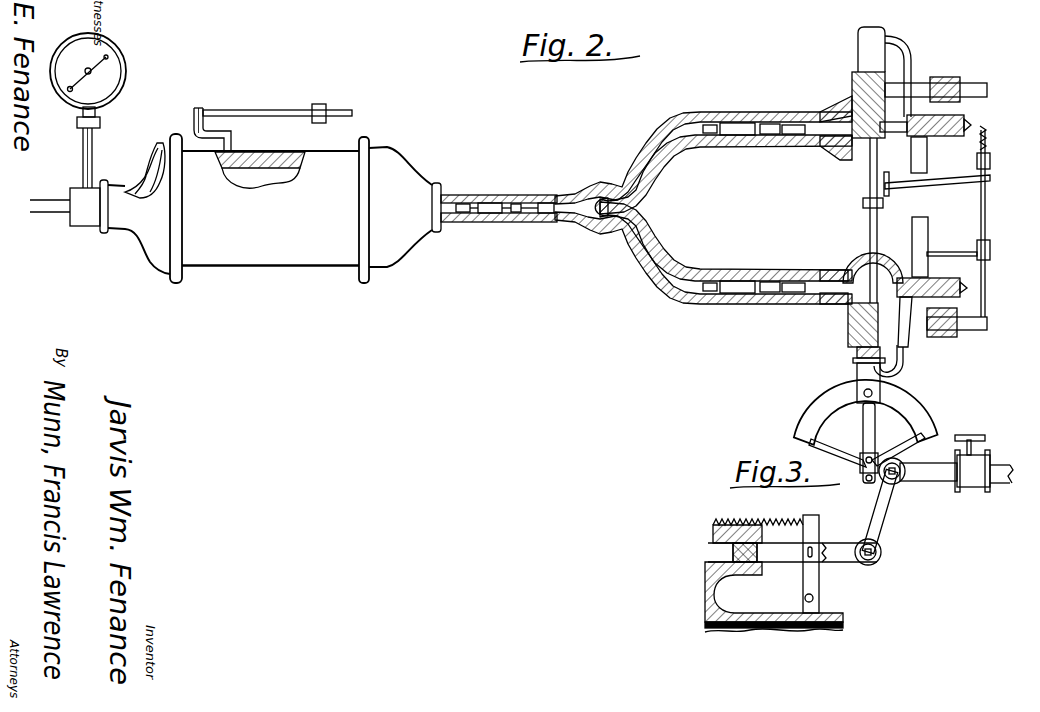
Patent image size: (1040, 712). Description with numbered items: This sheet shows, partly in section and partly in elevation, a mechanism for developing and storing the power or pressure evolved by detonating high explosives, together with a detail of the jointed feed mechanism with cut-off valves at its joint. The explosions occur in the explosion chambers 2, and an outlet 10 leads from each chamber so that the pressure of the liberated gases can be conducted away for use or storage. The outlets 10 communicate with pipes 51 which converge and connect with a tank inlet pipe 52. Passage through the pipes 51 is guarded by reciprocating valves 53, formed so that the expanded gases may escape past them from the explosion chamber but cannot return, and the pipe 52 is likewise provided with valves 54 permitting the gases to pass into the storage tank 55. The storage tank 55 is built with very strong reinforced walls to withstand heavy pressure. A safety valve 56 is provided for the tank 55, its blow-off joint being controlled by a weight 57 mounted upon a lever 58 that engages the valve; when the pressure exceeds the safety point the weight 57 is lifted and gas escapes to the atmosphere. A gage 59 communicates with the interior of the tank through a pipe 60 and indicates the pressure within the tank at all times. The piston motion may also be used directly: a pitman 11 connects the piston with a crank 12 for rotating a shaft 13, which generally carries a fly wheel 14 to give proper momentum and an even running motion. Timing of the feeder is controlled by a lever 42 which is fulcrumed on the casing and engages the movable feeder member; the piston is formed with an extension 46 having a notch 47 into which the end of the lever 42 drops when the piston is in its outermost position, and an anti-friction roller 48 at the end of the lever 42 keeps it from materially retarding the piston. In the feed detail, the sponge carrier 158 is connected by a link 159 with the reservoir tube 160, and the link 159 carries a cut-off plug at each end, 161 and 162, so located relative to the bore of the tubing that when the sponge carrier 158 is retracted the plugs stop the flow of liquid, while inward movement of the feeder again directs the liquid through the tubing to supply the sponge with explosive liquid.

In FIG. 2, the gage 59 is at (116, 70).
In FIG. 2, the pipe 60 is at (94, 150).
In FIG. 2, the storage tank 55 is at (350, 176).
In FIG. 2, the safety valve 56 is at (232, 141).
In FIG. 2, the weight 57 is at (322, 104).
In FIG. 2, the lever 58 is at (278, 116).
In FIG. 2, the tank inlet pipe 52 is at (463, 198).
In FIG. 2, the valves 54 is at (515, 200).
In FIG. 2, the pipes 51 is at (650, 160).
In FIG. 2, the reciprocating valves 53 is at (765, 140).
In FIG. 2, the outlet 10 is at (838, 140).
In FIG. 2, the explosion chambers 2 is at (907, 160).
In FIG. 3, the lever 42 is at (905, 358).
In FIG. 3, the notch 47 is at (856, 354).
In FIG. 3, the extension 46 is at (857, 378).
In FIG. 3, the anti-friction roller 48 is at (882, 378).
In FIG. 3, the fly wheel 14 is at (930, 413).
In FIG. 3, the pitman 11 is at (860, 443).
In FIG. 3, the reservoir tube 160 is at (905, 468).
In FIG. 3, the cut-off plug 162 is at (905, 488).
In FIG. 3, the crank 12 is at (830, 525).
In FIG. 3, the link 159 is at (882, 524).
In FIG. 3, the cut-off plug 161 is at (880, 563).
In FIG. 3, the shaft 13 is at (830, 527).
In FIG. 3, the sponge carrier 158 is at (791, 564).